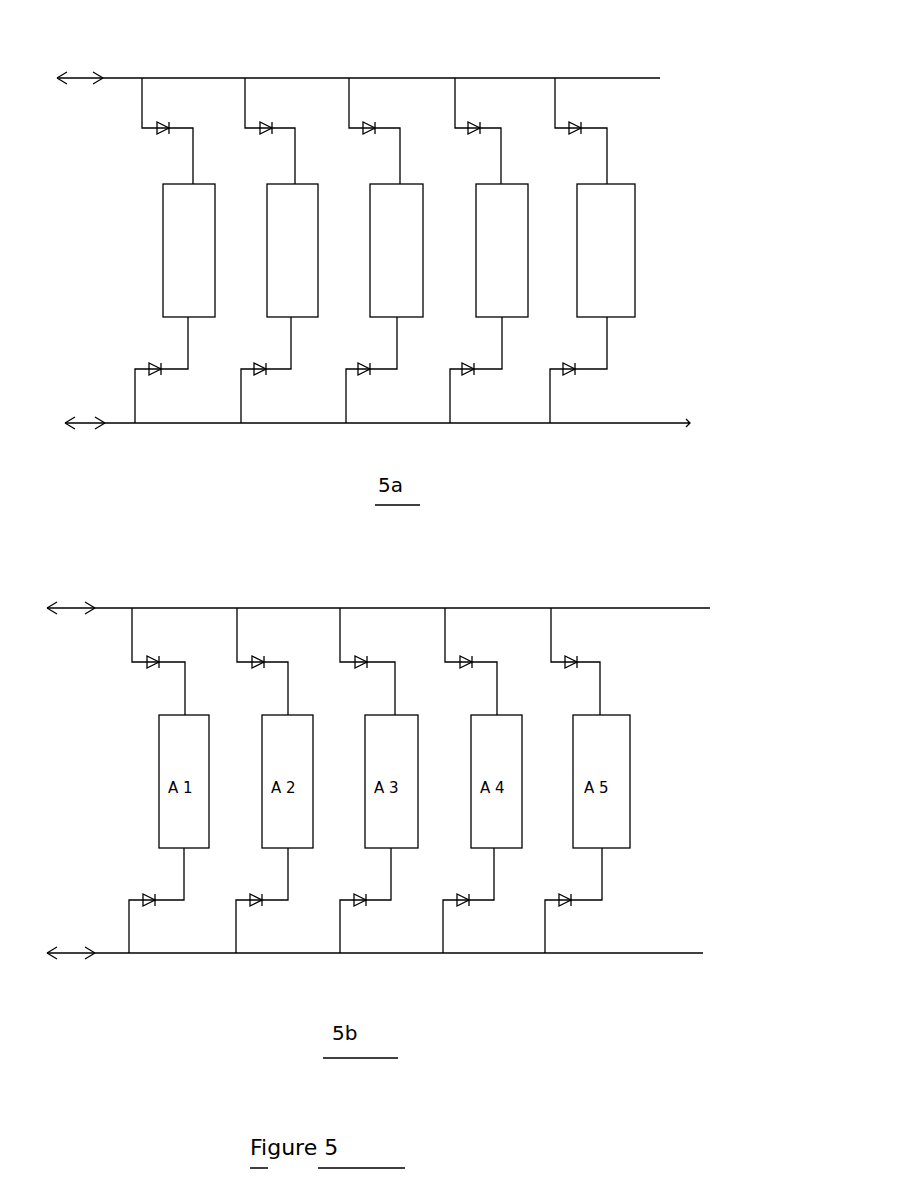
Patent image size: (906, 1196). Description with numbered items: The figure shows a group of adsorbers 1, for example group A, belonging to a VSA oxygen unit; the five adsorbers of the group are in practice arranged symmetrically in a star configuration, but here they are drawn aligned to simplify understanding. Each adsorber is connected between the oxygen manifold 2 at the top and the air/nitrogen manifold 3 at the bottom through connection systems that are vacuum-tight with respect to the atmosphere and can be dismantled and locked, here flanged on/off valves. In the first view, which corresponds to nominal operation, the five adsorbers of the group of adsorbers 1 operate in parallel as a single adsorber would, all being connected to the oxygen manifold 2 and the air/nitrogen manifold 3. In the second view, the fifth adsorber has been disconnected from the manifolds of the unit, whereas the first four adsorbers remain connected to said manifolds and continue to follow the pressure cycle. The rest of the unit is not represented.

In FIG. 5a, the group of adsorbers 1 is at (703, 118).
In FIG. 5a, the oxygen manifold 2 is at (307, 77).
In FIG. 5b, the oxygen manifold 2 is at (370, 606).
In FIG. 5a, the air/nitrogen manifold 3 is at (188, 426).
In FIG. 5b, the air/nitrogen manifold 3 is at (213, 951).